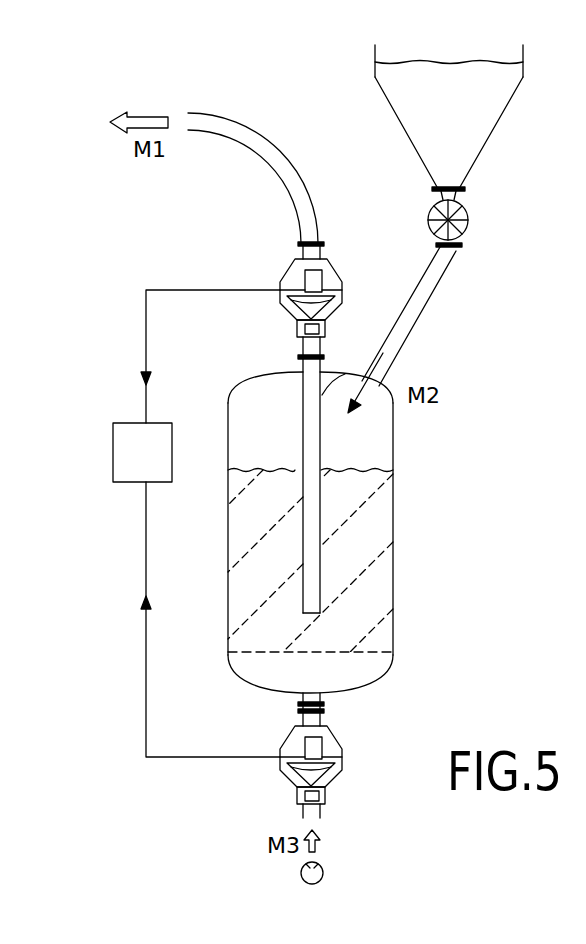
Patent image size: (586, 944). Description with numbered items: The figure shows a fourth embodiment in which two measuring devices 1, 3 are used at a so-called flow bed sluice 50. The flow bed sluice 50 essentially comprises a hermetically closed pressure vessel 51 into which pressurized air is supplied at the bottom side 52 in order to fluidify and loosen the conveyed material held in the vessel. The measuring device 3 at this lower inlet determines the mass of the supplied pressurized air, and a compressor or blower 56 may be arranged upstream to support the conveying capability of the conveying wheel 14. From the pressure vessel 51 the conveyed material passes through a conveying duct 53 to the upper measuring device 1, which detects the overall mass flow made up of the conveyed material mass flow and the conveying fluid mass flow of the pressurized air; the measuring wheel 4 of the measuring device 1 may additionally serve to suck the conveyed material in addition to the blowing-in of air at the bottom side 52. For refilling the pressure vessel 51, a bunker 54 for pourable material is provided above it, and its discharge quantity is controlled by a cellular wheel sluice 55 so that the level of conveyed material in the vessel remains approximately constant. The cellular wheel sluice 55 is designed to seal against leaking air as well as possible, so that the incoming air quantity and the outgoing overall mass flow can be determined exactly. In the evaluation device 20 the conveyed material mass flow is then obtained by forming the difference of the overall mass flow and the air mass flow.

The measuring device 1 is at (277, 266).
The measuring device 3 is at (272, 742).
The measuring wheel 4 is at (290, 314).
The conveying wheel 14 is at (292, 773).
The evaluation device 20 is at (160, 482).
The flow bed sluice 50 is at (410, 557).
The pressure vessel 51 is at (395, 476).
The bottom side 52 is at (322, 701).
The conveying duct 53 is at (321, 392).
The bunker 54 is at (477, 157).
The cellular wheel sluice 55 is at (468, 221).
The blower 56 is at (320, 865).